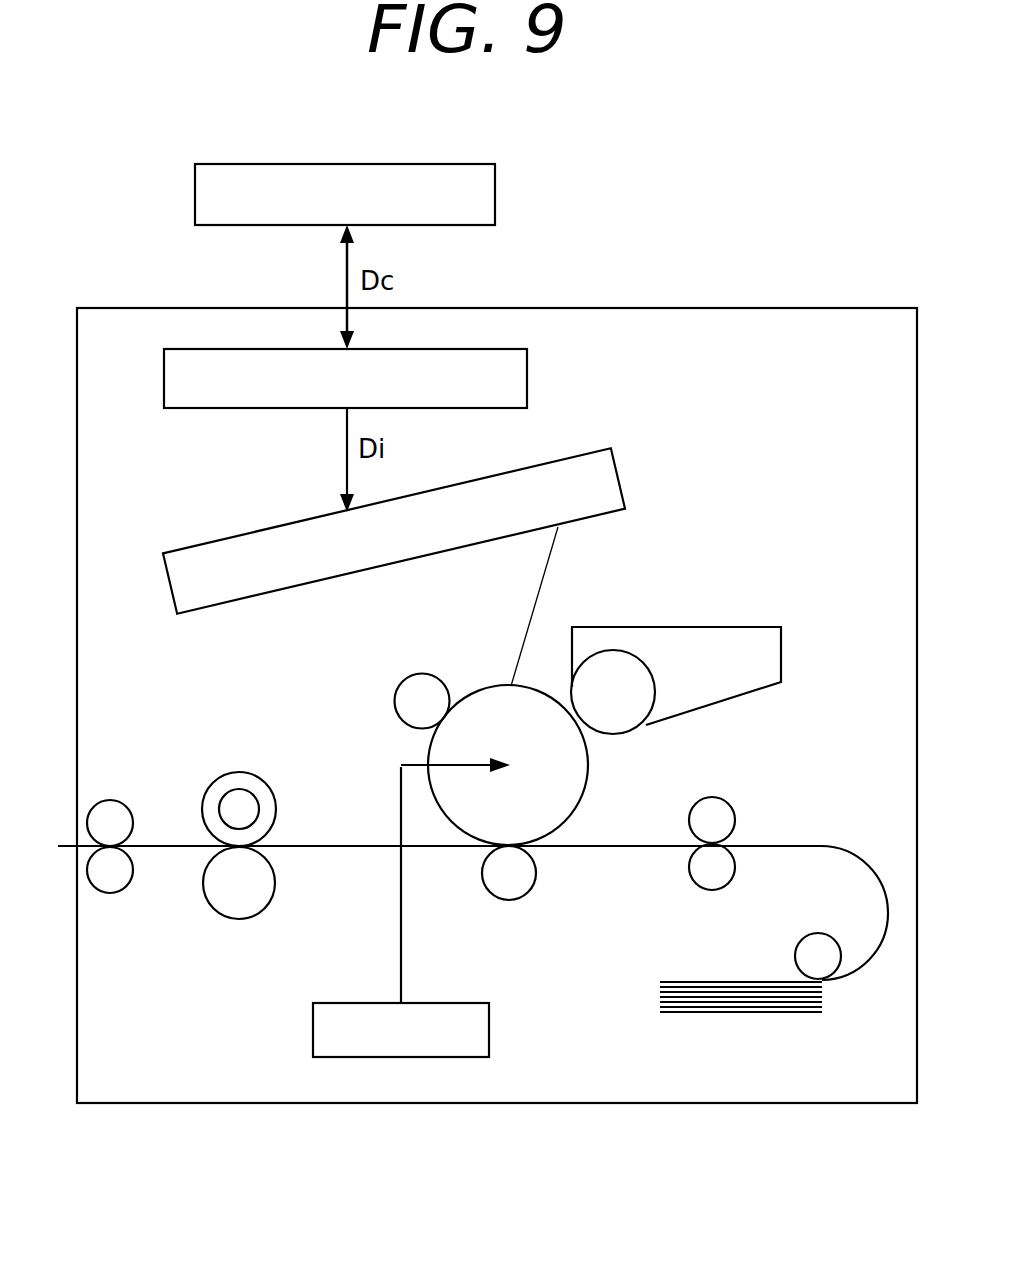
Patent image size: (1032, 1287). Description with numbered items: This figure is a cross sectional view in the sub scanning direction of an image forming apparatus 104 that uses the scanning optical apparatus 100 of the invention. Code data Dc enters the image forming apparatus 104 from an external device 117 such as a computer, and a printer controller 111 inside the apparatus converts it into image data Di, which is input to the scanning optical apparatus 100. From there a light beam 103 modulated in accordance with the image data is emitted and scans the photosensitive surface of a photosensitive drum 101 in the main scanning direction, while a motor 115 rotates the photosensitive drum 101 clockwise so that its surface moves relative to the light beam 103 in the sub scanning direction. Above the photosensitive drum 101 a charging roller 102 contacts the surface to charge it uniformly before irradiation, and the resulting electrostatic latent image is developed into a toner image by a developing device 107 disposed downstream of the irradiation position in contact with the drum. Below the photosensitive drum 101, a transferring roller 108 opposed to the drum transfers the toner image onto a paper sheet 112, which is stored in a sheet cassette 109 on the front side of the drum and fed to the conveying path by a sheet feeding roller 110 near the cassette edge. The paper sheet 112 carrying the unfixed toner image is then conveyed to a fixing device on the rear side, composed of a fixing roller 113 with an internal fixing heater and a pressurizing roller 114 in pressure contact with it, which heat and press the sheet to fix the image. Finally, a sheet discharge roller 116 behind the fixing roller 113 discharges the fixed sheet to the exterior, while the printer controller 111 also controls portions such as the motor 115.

The scanning optical apparatus 100 is at (226, 538).
The photosensitive drum 101 is at (580, 786).
The charging roller 102 is at (414, 684).
The light beam 103 is at (540, 584).
The image forming apparatus 104 is at (678, 308).
The developing device 107 is at (707, 634).
The transferring roller 108 is at (530, 874).
The sheet cassette 109 is at (738, 1014).
The sheet feeding roller 110 is at (822, 942).
The printer controller 111 is at (527, 377).
The paper sheet 112 is at (364, 845).
The fixing roller 113 is at (254, 786).
The pressurizing roller 114 is at (236, 910).
The motor 115 is at (442, 1003).
The sheet discharge roller 116 is at (115, 808).
The external device 117 is at (495, 191).